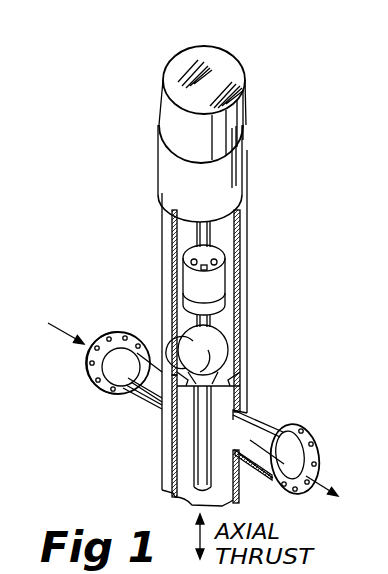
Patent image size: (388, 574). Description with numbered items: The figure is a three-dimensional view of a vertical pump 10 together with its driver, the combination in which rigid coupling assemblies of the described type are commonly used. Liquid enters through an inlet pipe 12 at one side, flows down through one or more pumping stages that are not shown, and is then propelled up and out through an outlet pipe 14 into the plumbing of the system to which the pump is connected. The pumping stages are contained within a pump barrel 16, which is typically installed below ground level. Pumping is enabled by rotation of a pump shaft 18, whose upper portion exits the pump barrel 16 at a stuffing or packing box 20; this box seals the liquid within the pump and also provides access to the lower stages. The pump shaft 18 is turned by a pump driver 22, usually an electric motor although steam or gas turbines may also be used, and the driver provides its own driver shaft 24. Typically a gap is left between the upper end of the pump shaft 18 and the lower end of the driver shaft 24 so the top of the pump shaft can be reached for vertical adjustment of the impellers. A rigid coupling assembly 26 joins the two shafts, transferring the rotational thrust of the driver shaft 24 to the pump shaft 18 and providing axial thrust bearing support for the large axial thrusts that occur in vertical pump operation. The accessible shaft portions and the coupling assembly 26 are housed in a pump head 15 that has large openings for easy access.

The vertical pump 10 is at (268, 164).
The inlet pipe 12 is at (121, 333).
The outlet pipe 14 is at (308, 448).
The pump head 15 is at (167, 257).
The pump barrel 16 is at (160, 444).
The pump shaft 18 is at (207, 412).
The stuffing or packing box 20 is at (222, 346).
The pump driver 22 is at (248, 136).
The driver shaft 24 is at (212, 246).
The rigid coupling assembly 26 is at (223, 272).